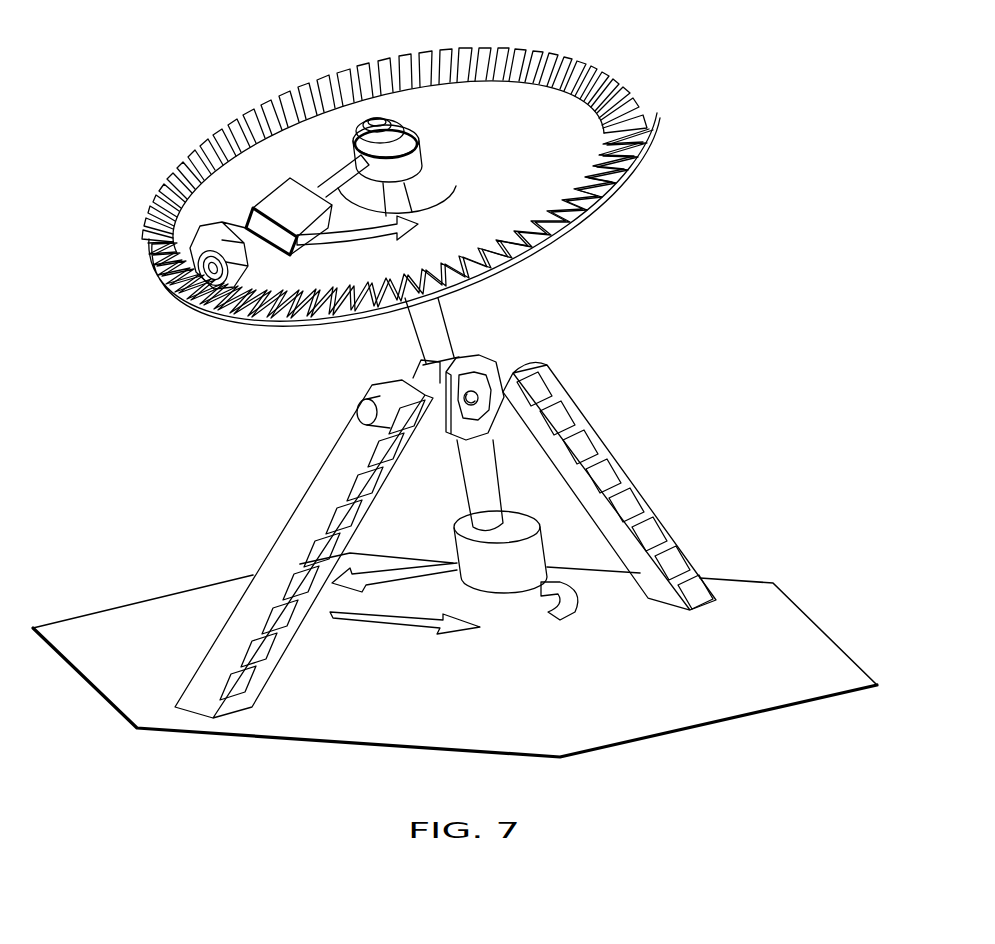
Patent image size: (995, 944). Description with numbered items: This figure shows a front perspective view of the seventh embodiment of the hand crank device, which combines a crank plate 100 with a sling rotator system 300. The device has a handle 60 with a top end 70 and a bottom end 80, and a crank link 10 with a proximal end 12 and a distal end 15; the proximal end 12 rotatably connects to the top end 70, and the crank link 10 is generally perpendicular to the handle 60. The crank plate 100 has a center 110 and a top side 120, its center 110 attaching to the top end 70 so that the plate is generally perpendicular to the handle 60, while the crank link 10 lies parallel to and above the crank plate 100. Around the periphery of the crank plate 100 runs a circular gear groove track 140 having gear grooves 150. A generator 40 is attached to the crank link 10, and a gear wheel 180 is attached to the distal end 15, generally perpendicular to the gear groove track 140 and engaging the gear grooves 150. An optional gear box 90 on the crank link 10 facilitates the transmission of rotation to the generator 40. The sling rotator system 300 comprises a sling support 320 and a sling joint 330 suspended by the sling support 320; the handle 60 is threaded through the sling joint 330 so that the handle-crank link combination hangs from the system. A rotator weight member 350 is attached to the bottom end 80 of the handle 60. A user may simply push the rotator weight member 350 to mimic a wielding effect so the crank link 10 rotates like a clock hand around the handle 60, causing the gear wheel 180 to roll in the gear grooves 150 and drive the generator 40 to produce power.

The crank plate 100 is at (520, 120).
The top side 120 is at (446, 168).
The circular gear groove track 140 is at (645, 153).
The gear grooves 150 is at (449, 219).
The proximal end 12 is at (351, 152).
The top end 70 is at (430, 163).
The center 110 is at (420, 190).
The crank link 10 is at (327, 187).
The generator 40 is at (280, 193).
The gear box 90 is at (248, 228).
The distal end 15 is at (220, 230).
The gear wheel 180 is at (195, 285).
The handle 60 is at (433, 322).
The sling rotator system 300 is at (571, 343).
The sling joint 330 is at (417, 373).
The sling support 320 is at (320, 488).
The bottom end 80 is at (483, 497).
The rotator weight member 350 is at (527, 547).